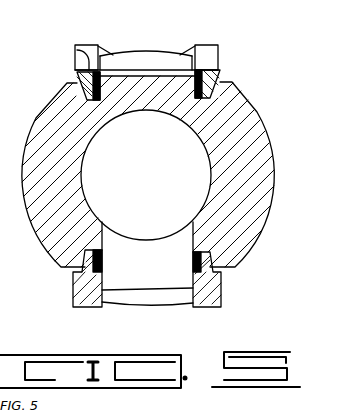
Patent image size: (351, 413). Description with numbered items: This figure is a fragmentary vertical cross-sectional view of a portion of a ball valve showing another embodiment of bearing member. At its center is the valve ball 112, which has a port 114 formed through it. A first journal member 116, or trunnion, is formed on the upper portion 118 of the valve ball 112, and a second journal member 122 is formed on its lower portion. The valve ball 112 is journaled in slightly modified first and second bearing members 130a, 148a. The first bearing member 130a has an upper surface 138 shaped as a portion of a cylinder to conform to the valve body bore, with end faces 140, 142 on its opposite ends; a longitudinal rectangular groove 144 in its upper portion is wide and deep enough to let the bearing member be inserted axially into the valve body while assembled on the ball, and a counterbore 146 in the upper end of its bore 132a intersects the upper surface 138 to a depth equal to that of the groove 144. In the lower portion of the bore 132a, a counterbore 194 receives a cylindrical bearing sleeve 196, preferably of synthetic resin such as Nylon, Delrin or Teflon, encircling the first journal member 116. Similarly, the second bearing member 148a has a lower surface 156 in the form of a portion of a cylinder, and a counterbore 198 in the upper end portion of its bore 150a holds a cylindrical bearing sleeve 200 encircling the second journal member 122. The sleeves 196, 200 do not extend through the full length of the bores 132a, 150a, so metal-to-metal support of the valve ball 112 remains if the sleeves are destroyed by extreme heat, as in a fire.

The valve ball 112 is at (225, 101).
The port 114 is at (165, 180).
The first journal member 116 is at (165, 53).
The upper portion 118 is at (129, 111).
The second journal member 122 is at (164, 303).
The first bearing member 130a is at (218, 70).
The bore 132a is at (121, 58).
The upper surface 138 is at (84, 44).
The end face 140 is at (75, 66).
The end face 142 is at (218, 48).
The longitudinal rectangular groove 144 is at (75, 53).
The counterbore 146 is at (99, 48).
The second bearing member 148a is at (88, 307).
The bore 150a is at (158, 311).
The lower surface 156 is at (205, 308).
The counterbore 194 is at (101, 92).
The cylindrical bearing sleeve 196 is at (194, 90).
The counterbore 198 is at (103, 262).
The cylindrical bearing sleeve 200 is at (103, 254).